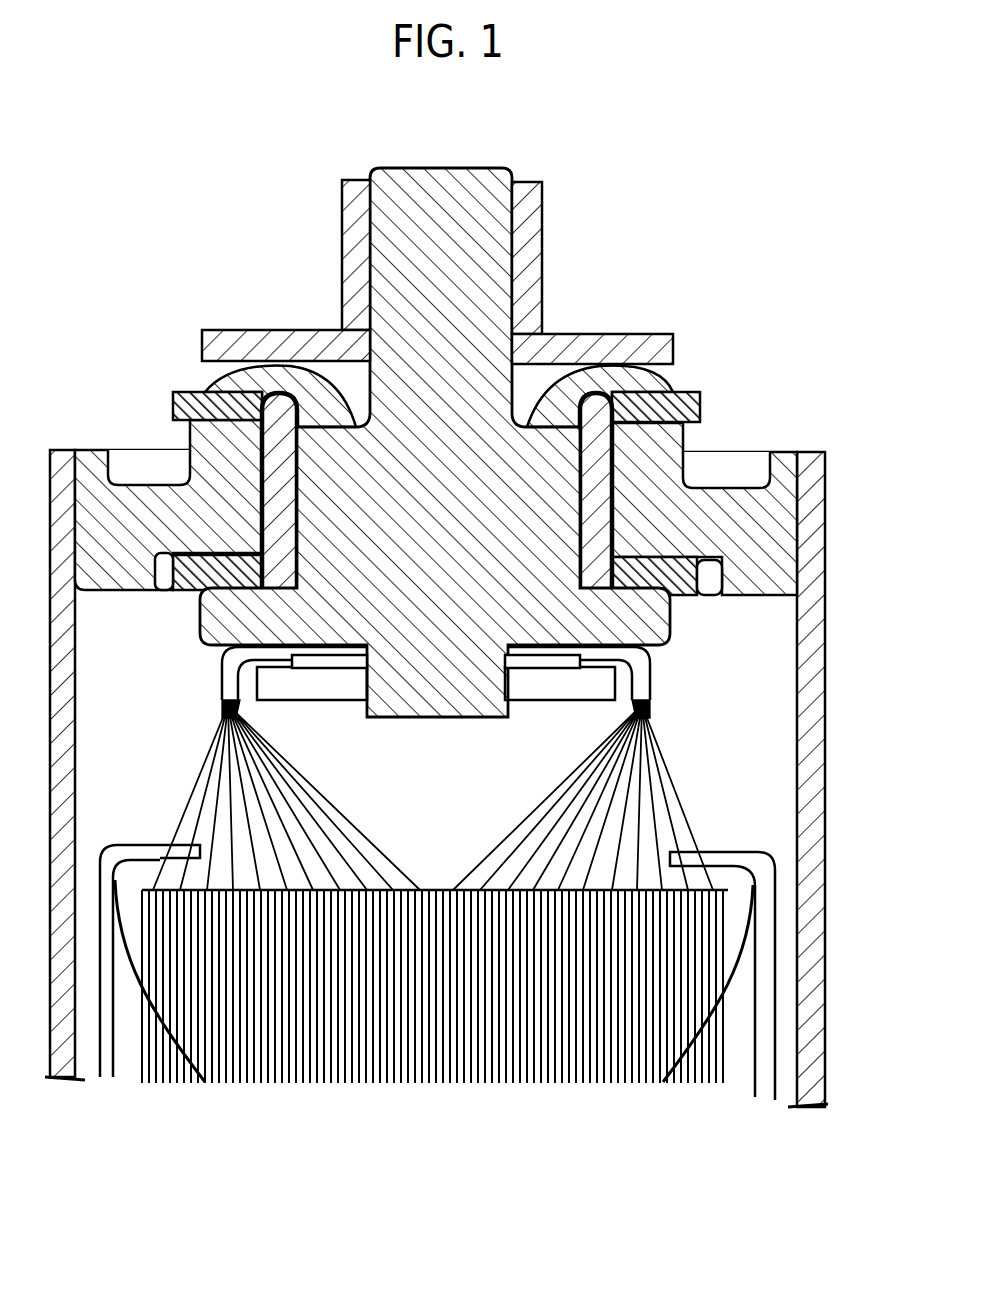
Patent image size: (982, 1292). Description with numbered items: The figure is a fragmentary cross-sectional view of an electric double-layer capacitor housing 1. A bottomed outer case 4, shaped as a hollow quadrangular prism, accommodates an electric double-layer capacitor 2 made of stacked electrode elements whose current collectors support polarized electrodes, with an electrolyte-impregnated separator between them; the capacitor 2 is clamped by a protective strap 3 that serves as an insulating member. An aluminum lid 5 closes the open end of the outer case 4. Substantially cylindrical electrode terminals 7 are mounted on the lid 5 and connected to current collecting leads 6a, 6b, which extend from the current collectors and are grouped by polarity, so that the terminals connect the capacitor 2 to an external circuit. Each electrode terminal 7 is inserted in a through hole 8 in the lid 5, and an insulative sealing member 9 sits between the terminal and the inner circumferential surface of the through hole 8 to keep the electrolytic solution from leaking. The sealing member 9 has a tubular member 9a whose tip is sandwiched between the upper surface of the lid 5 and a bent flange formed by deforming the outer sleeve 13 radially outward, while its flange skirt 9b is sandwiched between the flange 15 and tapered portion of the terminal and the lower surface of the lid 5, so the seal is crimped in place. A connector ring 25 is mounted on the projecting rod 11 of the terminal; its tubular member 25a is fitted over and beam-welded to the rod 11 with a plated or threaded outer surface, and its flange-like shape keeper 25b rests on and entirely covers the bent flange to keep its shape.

The electric double-layer capacitor housing 1 is at (620, 162).
The electric double-layer capacitor 2 is at (693, 778).
The protective strap 3 is at (778, 912).
The bottomed outer case 4 is at (825, 620).
The lid 5 is at (723, 490).
The current collecting lead 6a is at (323, 787).
The current collecting lead 6b is at (530, 800).
The electrode terminal 7 is at (473, 160).
The through hole 8 is at (583, 447).
The insulative sealing member 9 is at (168, 405).
The tubular member 9a is at (700, 397).
The flange skirt 9b is at (683, 598).
The projecting rod 11 is at (542, 232).
The outer sleeve 13 is at (673, 370).
The flange 15 is at (667, 648).
The connector ring 25 is at (298, 257).
The tubular member 25a is at (342, 205).
The shape keeper 25b is at (245, 330).